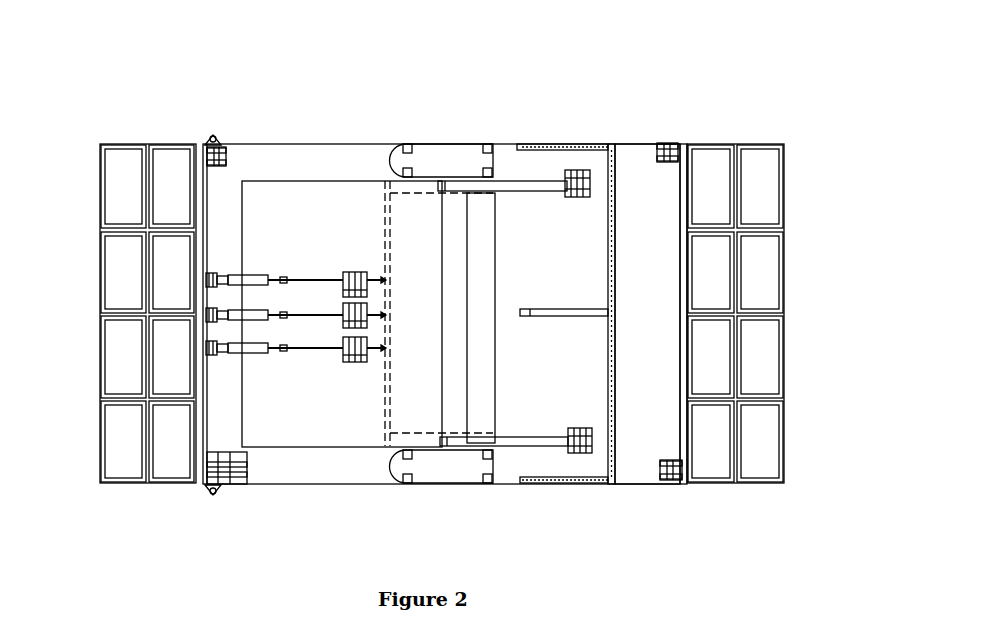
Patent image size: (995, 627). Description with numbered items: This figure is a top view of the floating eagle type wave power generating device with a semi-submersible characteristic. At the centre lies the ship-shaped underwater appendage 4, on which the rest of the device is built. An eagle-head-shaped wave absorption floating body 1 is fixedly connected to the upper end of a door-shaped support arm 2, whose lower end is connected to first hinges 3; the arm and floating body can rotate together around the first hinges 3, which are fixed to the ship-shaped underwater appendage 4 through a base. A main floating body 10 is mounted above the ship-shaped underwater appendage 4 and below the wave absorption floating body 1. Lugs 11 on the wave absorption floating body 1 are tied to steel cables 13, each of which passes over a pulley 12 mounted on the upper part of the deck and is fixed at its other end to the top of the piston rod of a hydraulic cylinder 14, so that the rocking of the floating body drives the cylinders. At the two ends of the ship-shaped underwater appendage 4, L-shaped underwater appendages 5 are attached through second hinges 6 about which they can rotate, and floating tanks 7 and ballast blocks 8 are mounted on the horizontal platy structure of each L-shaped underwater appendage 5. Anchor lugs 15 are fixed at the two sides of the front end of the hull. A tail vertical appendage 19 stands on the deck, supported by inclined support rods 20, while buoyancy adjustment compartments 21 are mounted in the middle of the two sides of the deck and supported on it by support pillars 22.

The eagle-head-shaped wave absorption floating body 1 is at (262, 447).
The door-shaped support arm 2 is at (520, 181).
The first hinges 3 is at (578, 172).
The ship-shaped underwater appendage 4 is at (633, 183).
The L-shaped underwater appendages 5 is at (187, 148).
The second hinges 6 is at (204, 147).
The floating tanks 7 is at (160, 158).
The ballast blocks 8 is at (118, 158).
The main floating body 10 is at (495, 240).
The lugs 11 is at (384, 278).
The pulleys 12 is at (349, 272).
The steel cable 13 is at (313, 277).
The hydraulic cylinder 14 is at (262, 277).
The anchor lugs 15 is at (212, 138).
The tail vertical appendage 19 is at (612, 333).
The inclined support rods 20 is at (565, 313).
The buoyancy adjustment compartments 21 is at (478, 150).
The support pillars 22 is at (488, 147).